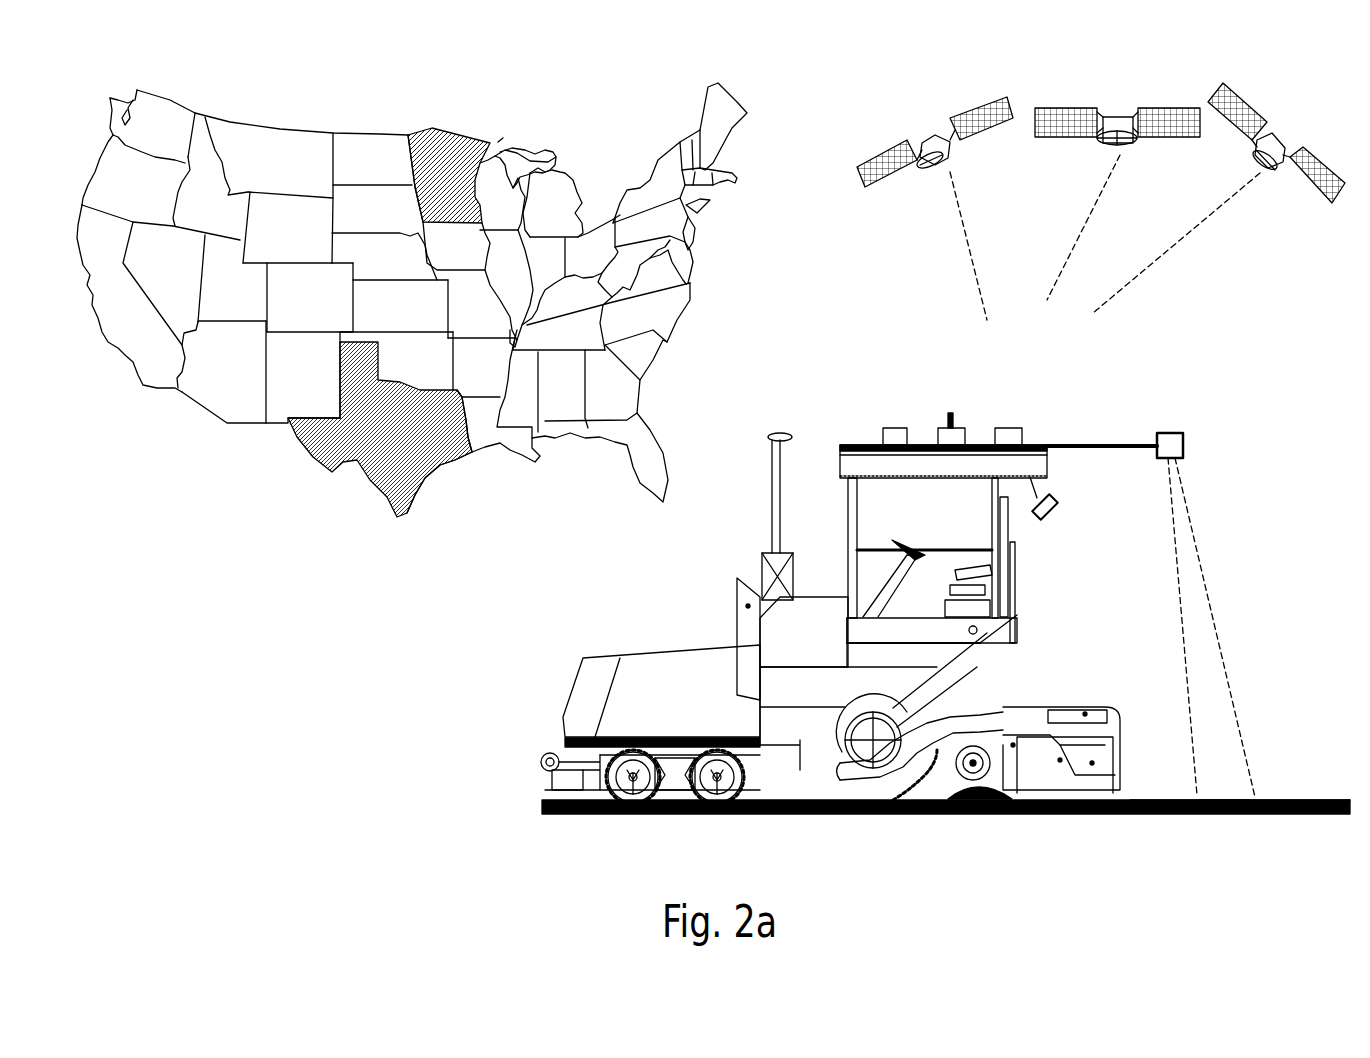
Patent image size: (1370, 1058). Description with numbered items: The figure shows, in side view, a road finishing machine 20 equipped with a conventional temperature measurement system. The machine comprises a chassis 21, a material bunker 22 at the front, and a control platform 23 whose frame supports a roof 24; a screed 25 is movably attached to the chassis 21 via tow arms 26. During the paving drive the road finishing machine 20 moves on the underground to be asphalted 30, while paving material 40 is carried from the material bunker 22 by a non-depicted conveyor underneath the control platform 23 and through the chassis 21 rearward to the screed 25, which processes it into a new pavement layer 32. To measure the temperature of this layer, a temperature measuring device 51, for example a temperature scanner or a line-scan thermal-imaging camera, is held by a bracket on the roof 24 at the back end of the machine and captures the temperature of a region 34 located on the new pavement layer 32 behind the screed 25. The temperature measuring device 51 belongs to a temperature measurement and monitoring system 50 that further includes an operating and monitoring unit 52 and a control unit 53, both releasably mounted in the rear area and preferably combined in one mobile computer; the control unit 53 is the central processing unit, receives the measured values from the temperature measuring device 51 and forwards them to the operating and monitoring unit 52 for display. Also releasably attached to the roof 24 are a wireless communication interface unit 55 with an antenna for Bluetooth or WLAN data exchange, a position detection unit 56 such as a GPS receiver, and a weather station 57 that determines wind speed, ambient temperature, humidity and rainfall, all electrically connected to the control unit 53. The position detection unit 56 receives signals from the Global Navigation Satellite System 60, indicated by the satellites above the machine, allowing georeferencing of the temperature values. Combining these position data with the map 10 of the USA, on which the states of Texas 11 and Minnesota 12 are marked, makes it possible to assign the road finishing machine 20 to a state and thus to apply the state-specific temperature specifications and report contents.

The map 10 is at (412, 288).
The state of Texas 11 is at (385, 450).
The state of Minnesota 12 is at (438, 157).
The road finishing machine 20 is at (911, 612).
The chassis 21 is at (809, 704).
The material bunker 22 is at (669, 711).
The control platform 23 is at (1025, 607).
The roof 24 is at (872, 462).
The screed 25 is at (1083, 760).
The tow arms 26 is at (997, 720).
The underground to be asphalted 30 is at (533, 795).
The new pavement layer 32 is at (1320, 793).
The region 34 is at (1222, 782).
The paving material 40 is at (968, 787).
The temperature measurement and monitoring system 50 is at (1151, 573).
The temperature measuring device 51 is at (1170, 435).
The operating and monitoring unit 52 is at (1076, 535).
The control unit 53 is at (1047, 507).
The wireless communication interface unit 55 is at (958, 437).
The position detection unit 56 is at (1008, 437).
The weather station 57 is at (893, 437).
The Global Navigation Satellite System 60 is at (925, 115).